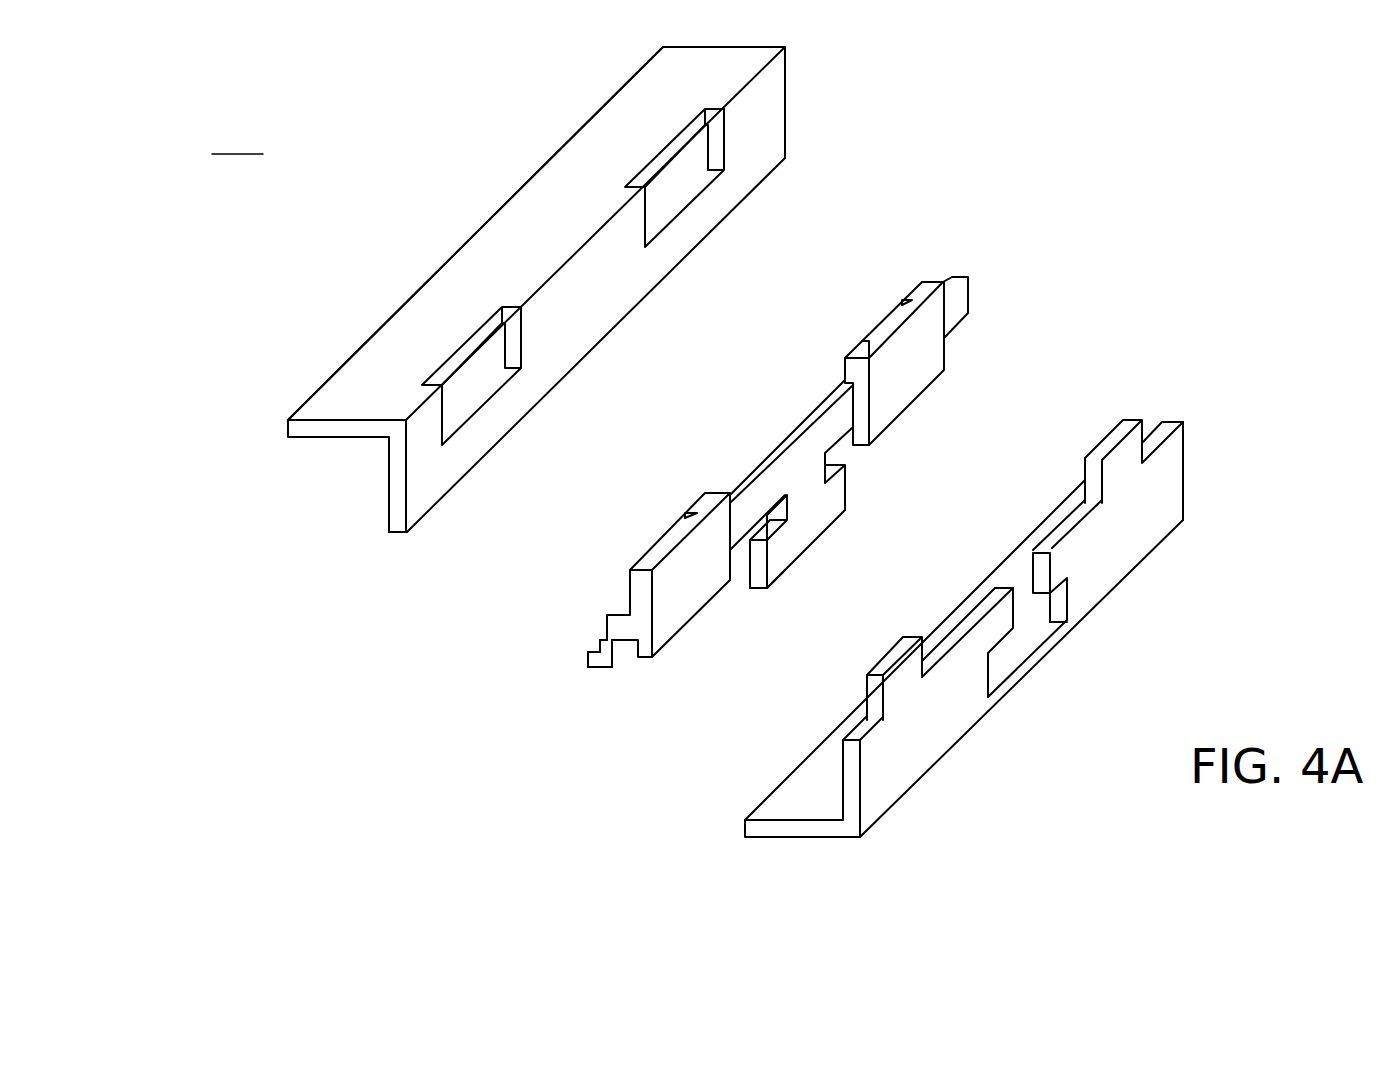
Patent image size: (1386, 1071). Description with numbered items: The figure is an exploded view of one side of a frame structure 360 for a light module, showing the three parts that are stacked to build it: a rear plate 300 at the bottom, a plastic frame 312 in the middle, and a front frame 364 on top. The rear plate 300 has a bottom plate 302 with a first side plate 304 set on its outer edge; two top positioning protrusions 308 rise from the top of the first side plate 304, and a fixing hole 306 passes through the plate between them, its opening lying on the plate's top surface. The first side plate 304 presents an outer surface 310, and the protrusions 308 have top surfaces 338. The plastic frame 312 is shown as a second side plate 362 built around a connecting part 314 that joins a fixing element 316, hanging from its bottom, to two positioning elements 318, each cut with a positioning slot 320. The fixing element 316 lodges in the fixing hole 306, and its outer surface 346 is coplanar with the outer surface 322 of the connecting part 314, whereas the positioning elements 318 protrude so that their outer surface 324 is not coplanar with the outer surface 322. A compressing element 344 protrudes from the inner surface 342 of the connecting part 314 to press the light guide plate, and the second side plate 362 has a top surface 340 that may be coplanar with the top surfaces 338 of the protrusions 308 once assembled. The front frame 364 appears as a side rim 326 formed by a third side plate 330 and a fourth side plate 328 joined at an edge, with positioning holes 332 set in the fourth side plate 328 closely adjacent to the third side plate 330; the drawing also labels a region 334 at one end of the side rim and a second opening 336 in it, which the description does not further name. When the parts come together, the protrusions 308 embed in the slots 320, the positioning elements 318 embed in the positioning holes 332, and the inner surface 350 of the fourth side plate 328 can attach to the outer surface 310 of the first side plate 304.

The rear plate 300 is at (1013, 633).
The bottom plate 302 is at (822, 835).
The first side plate 304 is at (1062, 601).
The fixing hole 306 is at (1043, 633).
The top positioning protrusion 308 is at (1140, 425).
The outer surface of first side plate 310 is at (1102, 531).
The plastic frame 312 is at (743, 440).
The connecting part 314 is at (780, 434).
The fixing element 316 is at (828, 540).
The positioning element 318 is at (964, 325).
The positioning slot 320 is at (893, 304).
The outer surface of connecting part 322 is at (745, 507).
The outer surface of positioning element 324 is at (953, 282).
The side rim 326 is at (493, 314).
The fourth side plate 328 is at (536, 314).
The third side plate 330 is at (487, 246).
The positioning hole 332 is at (688, 187).
The end portion of side wall 334 is at (768, 100).
The second opening 336 is at (570, 186).
The top surface of top positioning protrusion 338 is at (897, 642).
The top surface of second side plate 340 is at (595, 556).
The inner surface of connecting part 342 is at (603, 620).
The compressing element 344 is at (590, 640).
The outer surface of fixing element 346 is at (786, 556).
The inner surface of fourth side plate 350 is at (335, 549).
The frame structure 360 is at (237, 138).
The second side plate 362 is at (980, 282).
The front frame 364 is at (465, 198).